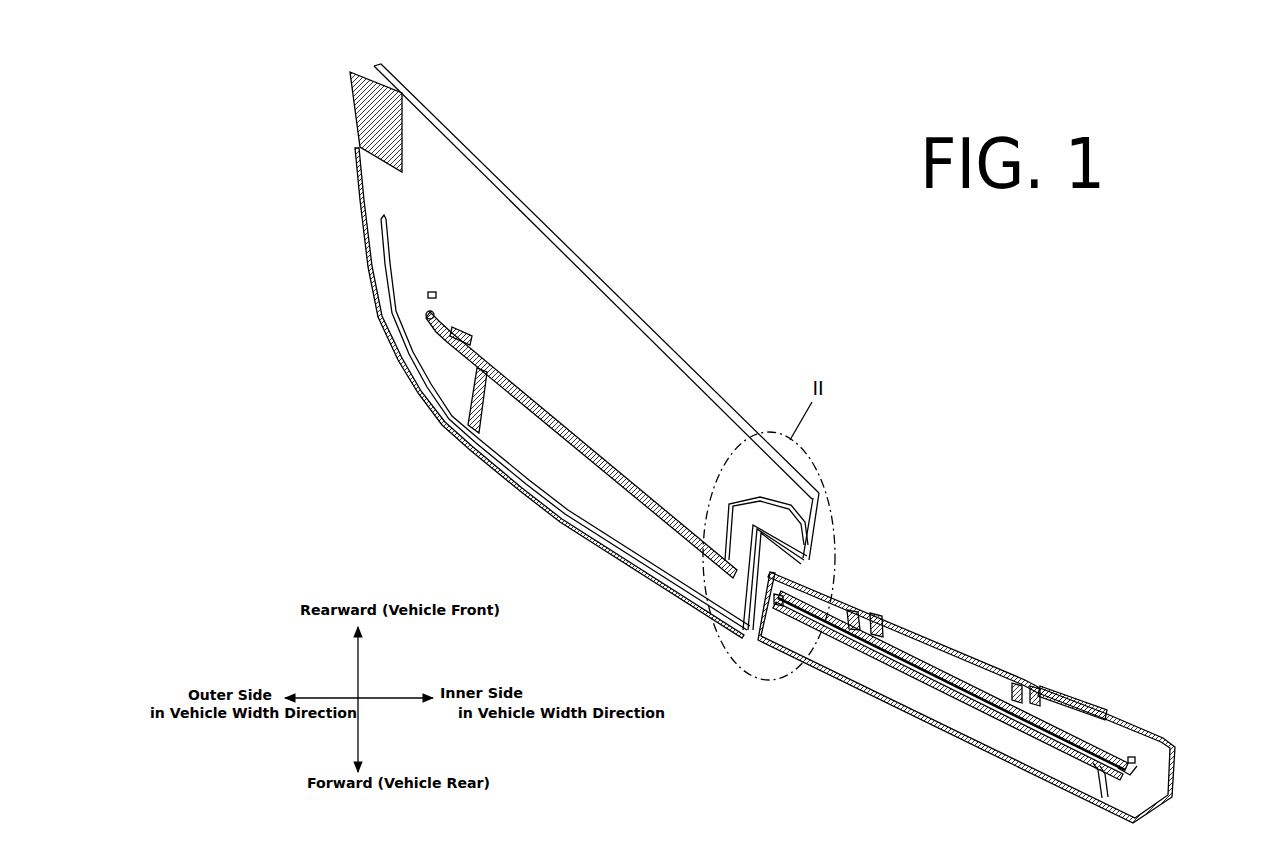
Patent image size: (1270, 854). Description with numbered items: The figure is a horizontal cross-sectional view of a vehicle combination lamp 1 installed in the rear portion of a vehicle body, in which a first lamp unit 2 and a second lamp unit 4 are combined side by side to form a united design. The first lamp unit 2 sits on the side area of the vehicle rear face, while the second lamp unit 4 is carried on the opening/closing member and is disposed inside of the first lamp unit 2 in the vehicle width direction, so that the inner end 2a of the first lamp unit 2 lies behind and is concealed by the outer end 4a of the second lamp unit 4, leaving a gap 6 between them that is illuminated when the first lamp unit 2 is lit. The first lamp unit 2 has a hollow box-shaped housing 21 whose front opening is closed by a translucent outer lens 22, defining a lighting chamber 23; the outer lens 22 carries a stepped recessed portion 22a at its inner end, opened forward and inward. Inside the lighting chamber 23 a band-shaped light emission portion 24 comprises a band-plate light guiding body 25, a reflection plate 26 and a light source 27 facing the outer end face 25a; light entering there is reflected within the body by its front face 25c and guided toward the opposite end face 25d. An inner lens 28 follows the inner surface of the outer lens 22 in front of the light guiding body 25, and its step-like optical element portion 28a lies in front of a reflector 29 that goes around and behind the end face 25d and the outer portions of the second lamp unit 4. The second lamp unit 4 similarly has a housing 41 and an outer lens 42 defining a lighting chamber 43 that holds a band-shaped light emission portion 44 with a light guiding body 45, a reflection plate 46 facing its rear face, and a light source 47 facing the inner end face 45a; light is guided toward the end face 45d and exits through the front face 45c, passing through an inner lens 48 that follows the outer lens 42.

The vehicle combination lamp 1 is at (823, 742).
The first lamp unit 2 is at (628, 303).
The end of the first lamp unit 2a is at (757, 545).
The second lamp unit 4 is at (1015, 667).
The end of the second lamp unit 4a is at (752, 640).
The gap 6 is at (747, 640).
The housing 21 is at (398, 130).
The outer lens 22 is at (607, 556).
The stepped recessed portion 22a is at (777, 563).
The lighting chamber 23 is at (530, 246).
The band-shaped light emission portion 24 is at (592, 477).
The light guiding body 25 is at (569, 443).
The end face 25a is at (436, 318).
The front face 25c is at (670, 531).
The end face 25d is at (737, 583).
The reflection plate 26 is at (590, 443).
The light source 27 is at (433, 290).
The inner lens 28 is at (500, 463).
The optical element portion 28a is at (791, 509).
The reflector 29 is at (793, 515).
The housing 41 is at (862, 611).
The outer lens 42 is at (1002, 768).
The lighting chamber 43 is at (955, 668).
The band-shaped light emission portion 44 is at (947, 694).
The light guiding body 45 is at (977, 701).
The end face 45a is at (1135, 764).
The front face 45c is at (907, 684).
The end face 45d is at (780, 607).
The reflection plate 46 is at (923, 643).
The light source 47 is at (1136, 758).
The inner lens 48 is at (1055, 795).